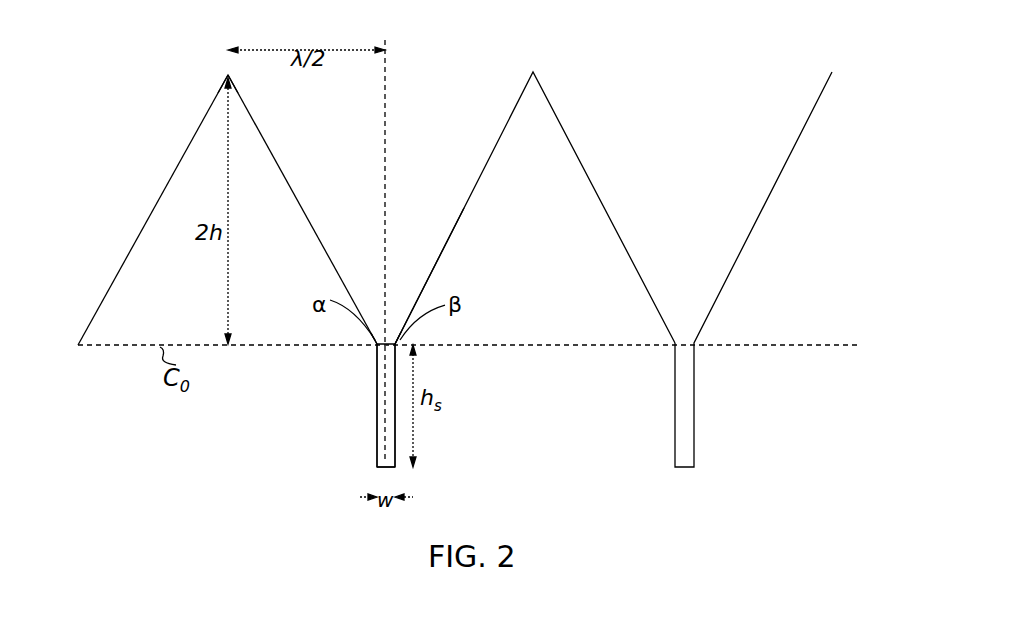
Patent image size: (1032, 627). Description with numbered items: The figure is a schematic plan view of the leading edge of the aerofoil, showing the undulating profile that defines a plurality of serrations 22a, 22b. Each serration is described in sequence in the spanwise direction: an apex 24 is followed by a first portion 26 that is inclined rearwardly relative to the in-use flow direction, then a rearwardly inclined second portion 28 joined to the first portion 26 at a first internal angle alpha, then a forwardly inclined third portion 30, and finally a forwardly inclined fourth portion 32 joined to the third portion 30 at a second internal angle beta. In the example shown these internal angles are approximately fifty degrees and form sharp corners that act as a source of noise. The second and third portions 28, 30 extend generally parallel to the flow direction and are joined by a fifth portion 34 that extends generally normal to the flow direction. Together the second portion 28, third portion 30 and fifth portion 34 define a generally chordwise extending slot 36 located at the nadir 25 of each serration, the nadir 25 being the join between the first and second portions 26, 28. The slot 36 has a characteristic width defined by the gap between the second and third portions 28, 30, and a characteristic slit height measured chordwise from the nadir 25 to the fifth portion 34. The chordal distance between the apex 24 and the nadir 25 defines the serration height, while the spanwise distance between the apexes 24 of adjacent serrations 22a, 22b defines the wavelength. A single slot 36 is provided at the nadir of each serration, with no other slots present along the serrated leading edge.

The serration 22a is at (180, 141).
The serration 22b is at (490, 139).
The apex 24 is at (226, 72).
The nadir 25 is at (378, 331).
The first portion 26 is at (306, 210).
The second portion 28 is at (376, 416).
The third portion 30 is at (396, 420).
The fourth portion 32 is at (456, 211).
The fifth portion 34 is at (383, 467).
The slot 36 is at (375, 440).